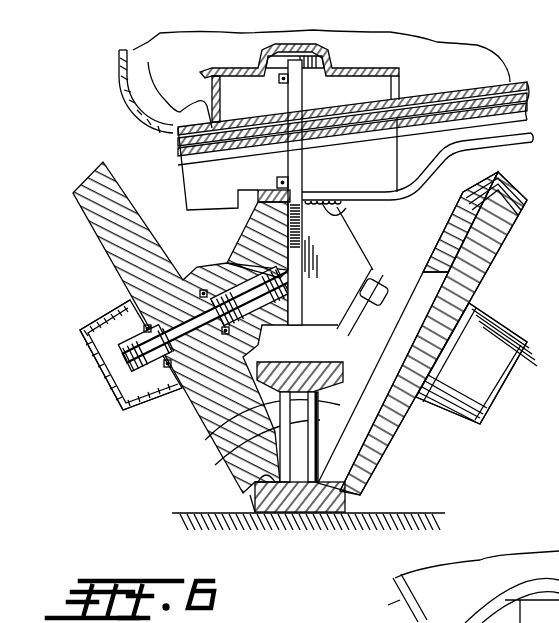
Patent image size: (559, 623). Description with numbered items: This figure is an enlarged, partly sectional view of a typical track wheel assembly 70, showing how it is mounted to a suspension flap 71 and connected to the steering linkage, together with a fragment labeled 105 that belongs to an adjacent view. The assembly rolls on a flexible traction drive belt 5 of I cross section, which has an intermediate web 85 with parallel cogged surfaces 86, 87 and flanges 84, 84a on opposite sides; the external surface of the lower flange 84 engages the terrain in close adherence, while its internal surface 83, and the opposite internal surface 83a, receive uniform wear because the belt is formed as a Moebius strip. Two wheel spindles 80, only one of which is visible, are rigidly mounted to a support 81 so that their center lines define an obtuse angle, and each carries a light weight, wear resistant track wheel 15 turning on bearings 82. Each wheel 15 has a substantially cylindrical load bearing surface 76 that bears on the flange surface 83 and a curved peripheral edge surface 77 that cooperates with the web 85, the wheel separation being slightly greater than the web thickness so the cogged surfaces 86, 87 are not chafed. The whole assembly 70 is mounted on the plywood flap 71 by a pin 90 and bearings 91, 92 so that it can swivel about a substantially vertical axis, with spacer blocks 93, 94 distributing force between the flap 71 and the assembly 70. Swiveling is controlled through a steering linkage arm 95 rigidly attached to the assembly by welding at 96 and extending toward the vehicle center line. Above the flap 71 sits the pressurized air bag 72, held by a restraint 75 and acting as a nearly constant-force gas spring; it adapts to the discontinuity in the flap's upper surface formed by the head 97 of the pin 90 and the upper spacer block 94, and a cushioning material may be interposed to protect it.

The traction drive belt 5 is at (345, 500).
The track wheel 15 is at (130, 255).
The track wheel assembly 70 is at (112, 139).
The suspension flap 71 is at (176, 143).
The air bag 72 is at (143, 63).
The restraint 75 is at (118, 74).
The cylindrical surface 76 is at (250, 495).
The curved peripheral edge surface 77 is at (233, 470).
The wheel spindle 80 is at (127, 408).
The support 81 is at (250, 232).
The bearings 82 is at (200, 268).
The upper surface of the flange 83 is at (240, 488).
The internal surface of the flange 83a is at (213, 420).
The lower flange 84 is at (262, 500).
The flange 84a is at (252, 360).
The web 85 is at (373, 390).
The cogged surface 86 is at (385, 450).
The cogged surface 87 is at (230, 443).
The pin 90 is at (300, 97).
The bearing 91 is at (283, 89).
The bearing 92 is at (280, 178).
The spacer block 93 is at (220, 97).
The upper spacer block 94 is at (200, 182).
The steering linkage arm 95 is at (417, 173).
The weld 96 is at (346, 215).
The head of the pin 97 is at (305, 55).
The adjacent figure element 105 is at (520, 620).